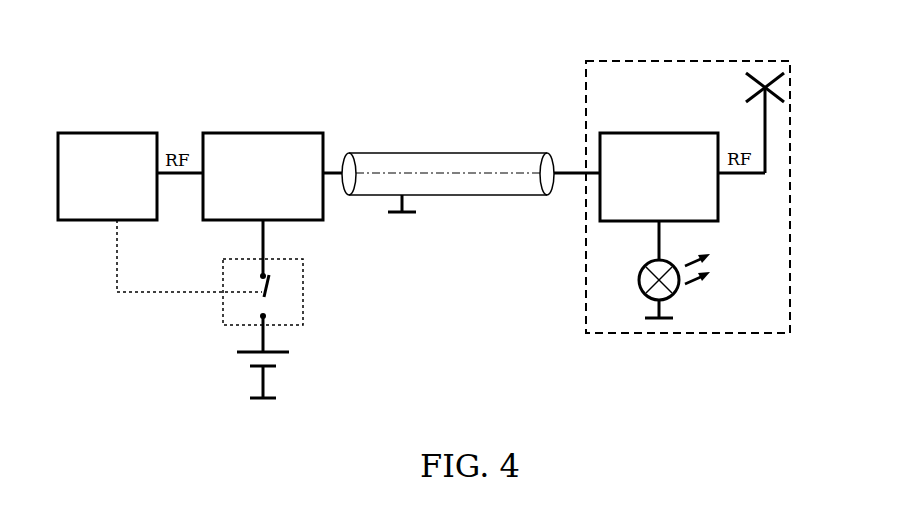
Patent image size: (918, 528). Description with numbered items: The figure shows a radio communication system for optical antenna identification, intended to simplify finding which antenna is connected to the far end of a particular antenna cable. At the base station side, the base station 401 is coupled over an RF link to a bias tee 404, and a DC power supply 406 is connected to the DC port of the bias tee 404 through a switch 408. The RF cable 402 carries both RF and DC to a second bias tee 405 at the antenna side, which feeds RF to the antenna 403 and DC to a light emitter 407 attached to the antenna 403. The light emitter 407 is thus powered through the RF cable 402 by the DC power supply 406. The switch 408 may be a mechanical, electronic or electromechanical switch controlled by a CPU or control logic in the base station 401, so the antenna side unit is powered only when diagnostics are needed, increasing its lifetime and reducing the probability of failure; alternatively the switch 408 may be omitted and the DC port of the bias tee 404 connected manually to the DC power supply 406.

The base station 401 is at (104, 133).
The RF cable 402 is at (474, 152).
The antenna 403 is at (750, 73).
The bias tee 404 is at (250, 133).
The bias tee 405 is at (648, 133).
The DC power supply 406 is at (286, 348).
The light emitter 407 is at (641, 265).
The switch 408 is at (305, 270).